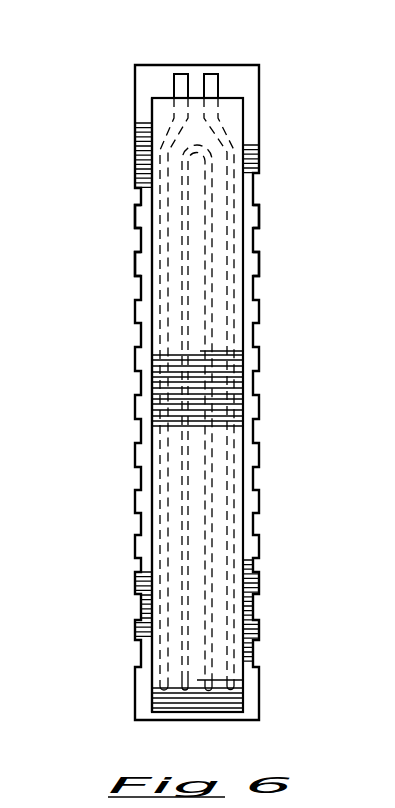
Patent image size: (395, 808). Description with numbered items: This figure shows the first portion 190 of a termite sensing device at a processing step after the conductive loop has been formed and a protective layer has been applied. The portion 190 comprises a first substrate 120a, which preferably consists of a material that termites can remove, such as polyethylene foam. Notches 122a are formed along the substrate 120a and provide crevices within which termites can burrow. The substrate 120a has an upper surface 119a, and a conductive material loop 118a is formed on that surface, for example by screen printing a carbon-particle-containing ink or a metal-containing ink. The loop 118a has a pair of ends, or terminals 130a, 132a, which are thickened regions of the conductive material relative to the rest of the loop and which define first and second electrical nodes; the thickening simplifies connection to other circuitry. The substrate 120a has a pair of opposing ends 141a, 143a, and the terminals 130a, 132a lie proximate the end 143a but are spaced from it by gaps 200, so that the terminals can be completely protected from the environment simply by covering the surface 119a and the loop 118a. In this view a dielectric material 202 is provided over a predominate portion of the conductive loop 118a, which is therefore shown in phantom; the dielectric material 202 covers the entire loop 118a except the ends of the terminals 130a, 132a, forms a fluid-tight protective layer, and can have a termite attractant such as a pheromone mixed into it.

The first portion of termite sensing device 190 is at (196, 382).
The end of substrate 143a is at (334, 36).
The end of substrate 141a is at (229, 726).
The conductive material loop 118a is at (233, 531).
The first substrate 120a is at (150, 439).
The notches 122a is at (133, 268).
The gaps 200 is at (192, 63).
The terminal 130a is at (170, 88).
The terminal 132a is at (324, 96).
The dielectric material 202 is at (238, 468).
The upper surface 119a is at (256, 387).